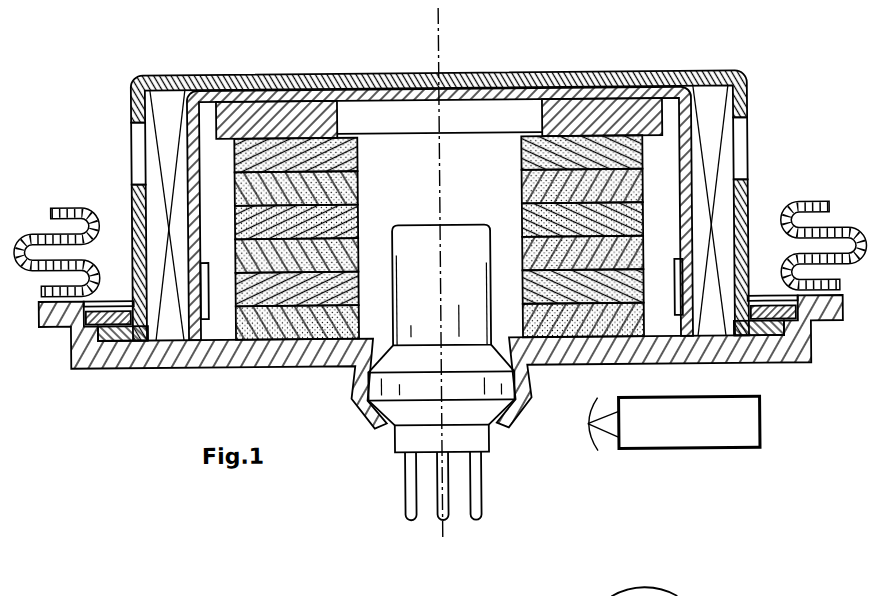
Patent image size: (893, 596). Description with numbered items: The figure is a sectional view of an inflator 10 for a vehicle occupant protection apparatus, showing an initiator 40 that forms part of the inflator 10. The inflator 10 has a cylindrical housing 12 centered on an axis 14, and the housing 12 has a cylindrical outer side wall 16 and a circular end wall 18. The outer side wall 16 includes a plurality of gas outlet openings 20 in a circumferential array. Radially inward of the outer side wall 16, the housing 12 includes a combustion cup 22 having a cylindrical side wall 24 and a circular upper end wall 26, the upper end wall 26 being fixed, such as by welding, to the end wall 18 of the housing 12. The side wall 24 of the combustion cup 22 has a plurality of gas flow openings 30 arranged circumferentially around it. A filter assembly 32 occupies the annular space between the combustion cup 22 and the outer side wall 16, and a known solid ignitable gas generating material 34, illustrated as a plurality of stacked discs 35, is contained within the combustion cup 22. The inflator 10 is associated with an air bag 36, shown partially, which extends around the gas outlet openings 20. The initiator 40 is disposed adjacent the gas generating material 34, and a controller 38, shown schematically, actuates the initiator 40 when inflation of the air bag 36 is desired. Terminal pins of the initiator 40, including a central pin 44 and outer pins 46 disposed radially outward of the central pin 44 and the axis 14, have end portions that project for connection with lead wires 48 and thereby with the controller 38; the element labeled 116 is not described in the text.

The inflator 10 is at (440, 296).
The housing 12 is at (422, 183).
The axis 14 is at (443, 32).
The outer side wall 16 is at (132, 105).
The end wall 18 is at (160, 73).
The gas outlet openings 20 is at (132, 140).
The combustion cup 22 is at (695, 154).
The side wall 24 is at (693, 176).
The upper end wall 26 is at (480, 94).
The gas flow openings 30 is at (685, 289).
The filter assembly 32 is at (163, 184).
The gas generating material 34 is at (352, 135).
The stacked discs 35 is at (360, 185).
The air bag 36 is at (830, 201).
The controller 38 is at (759, 425).
The initiator 40 is at (430, 397).
The central pin 44 is at (440, 521).
The outer pins 46 is at (480, 500).
The lead wires 48 is at (585, 425).
The mounting surface 116 is at (645, 587).